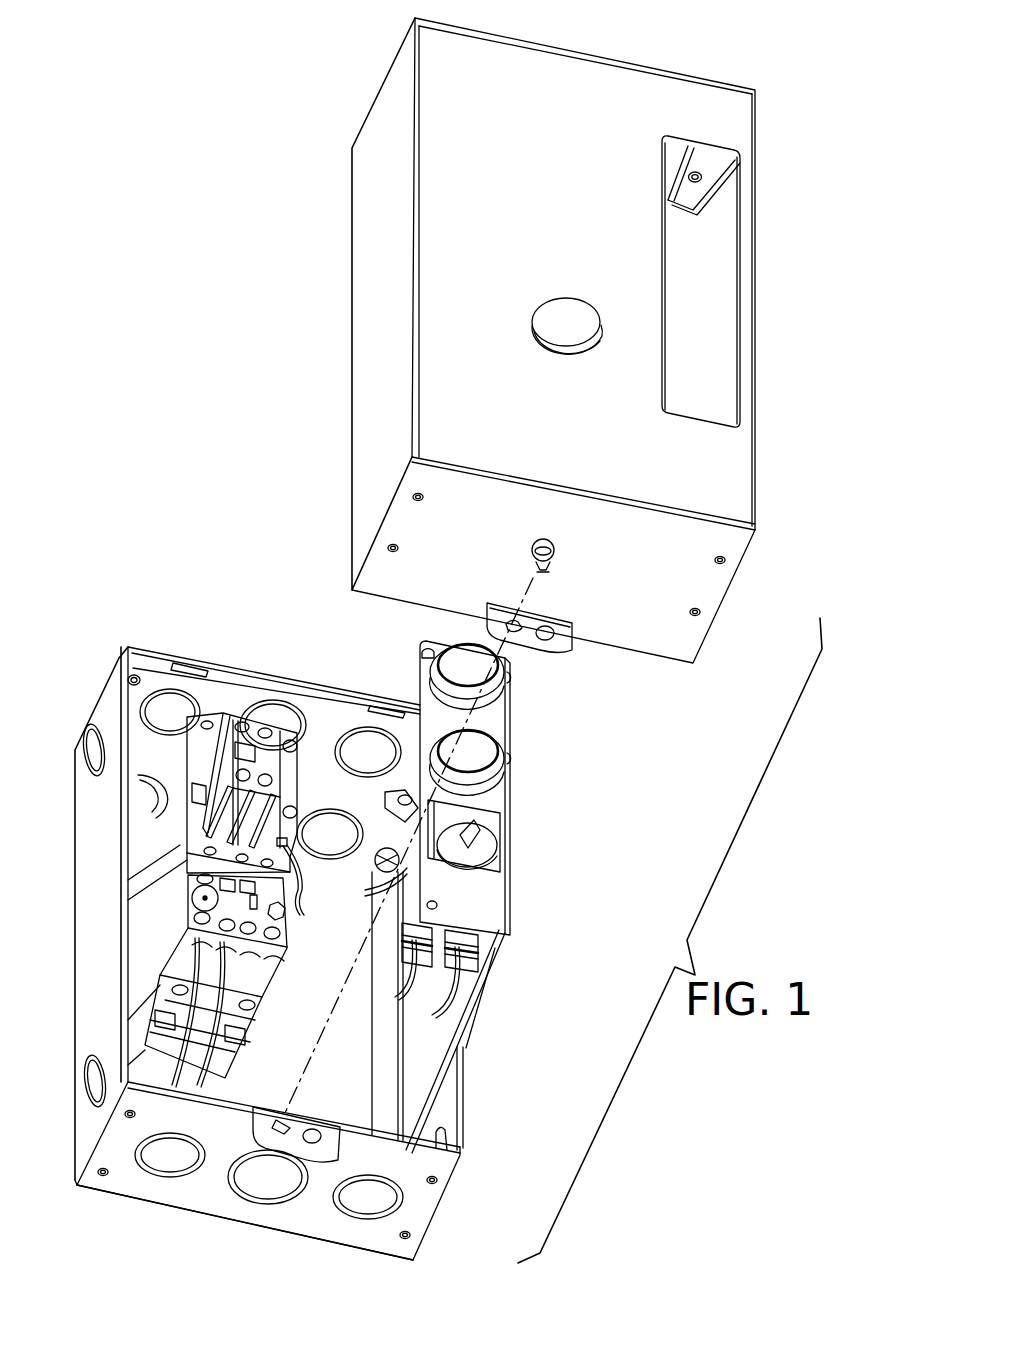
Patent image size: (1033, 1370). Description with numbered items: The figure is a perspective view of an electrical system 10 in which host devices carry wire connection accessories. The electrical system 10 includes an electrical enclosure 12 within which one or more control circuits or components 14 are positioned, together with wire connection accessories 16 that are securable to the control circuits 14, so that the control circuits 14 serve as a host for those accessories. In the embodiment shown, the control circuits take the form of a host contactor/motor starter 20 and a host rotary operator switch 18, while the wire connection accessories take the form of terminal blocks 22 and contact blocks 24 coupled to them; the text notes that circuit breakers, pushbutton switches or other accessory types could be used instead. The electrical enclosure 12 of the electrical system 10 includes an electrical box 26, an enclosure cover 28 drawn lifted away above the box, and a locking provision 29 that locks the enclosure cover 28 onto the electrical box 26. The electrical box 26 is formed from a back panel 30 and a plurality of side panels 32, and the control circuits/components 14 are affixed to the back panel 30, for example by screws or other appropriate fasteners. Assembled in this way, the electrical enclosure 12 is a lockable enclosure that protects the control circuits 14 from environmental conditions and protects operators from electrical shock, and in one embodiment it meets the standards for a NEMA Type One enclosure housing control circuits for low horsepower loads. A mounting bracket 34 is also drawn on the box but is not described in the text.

The electrical system 10 is at (115, 1212).
The electrical enclosure 12 is at (200, 625).
The control circuits or components 14 is at (476, 814).
The wire connection accessories 16 is at (227, 857).
The host rotary operator switch 18 is at (445, 816).
The host contactor/motor starter 20 is at (153, 933).
The terminal blocks 22 is at (237, 762).
The contact blocks 24 is at (480, 950).
The electrical box 26 is at (123, 1033).
The enclosure cover 28 is at (360, 320).
The locking provision 29 is at (556, 548).
The back panel 30 is at (274, 1089).
The side panels 32 is at (442, 1128).
The mounting bracket 34 is at (330, 1148).